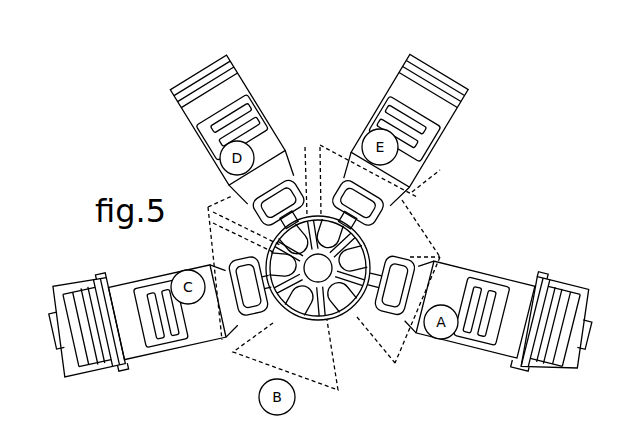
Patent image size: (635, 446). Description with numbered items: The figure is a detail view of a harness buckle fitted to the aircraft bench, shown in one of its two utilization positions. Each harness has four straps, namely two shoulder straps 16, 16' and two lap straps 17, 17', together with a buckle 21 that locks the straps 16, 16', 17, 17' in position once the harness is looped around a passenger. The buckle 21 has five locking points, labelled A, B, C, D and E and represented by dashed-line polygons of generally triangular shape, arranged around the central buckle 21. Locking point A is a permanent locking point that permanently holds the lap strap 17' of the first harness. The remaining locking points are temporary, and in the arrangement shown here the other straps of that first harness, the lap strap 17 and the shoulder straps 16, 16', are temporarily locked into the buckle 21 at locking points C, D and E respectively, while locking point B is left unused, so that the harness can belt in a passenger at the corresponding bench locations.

The shoulder strap 16 is at (245, 148).
The shoulder strap 16' is at (400, 148).
The lap strap 17 is at (162, 309).
The lap strap 17' is at (478, 305).
The buckle 21 is at (343, 316).